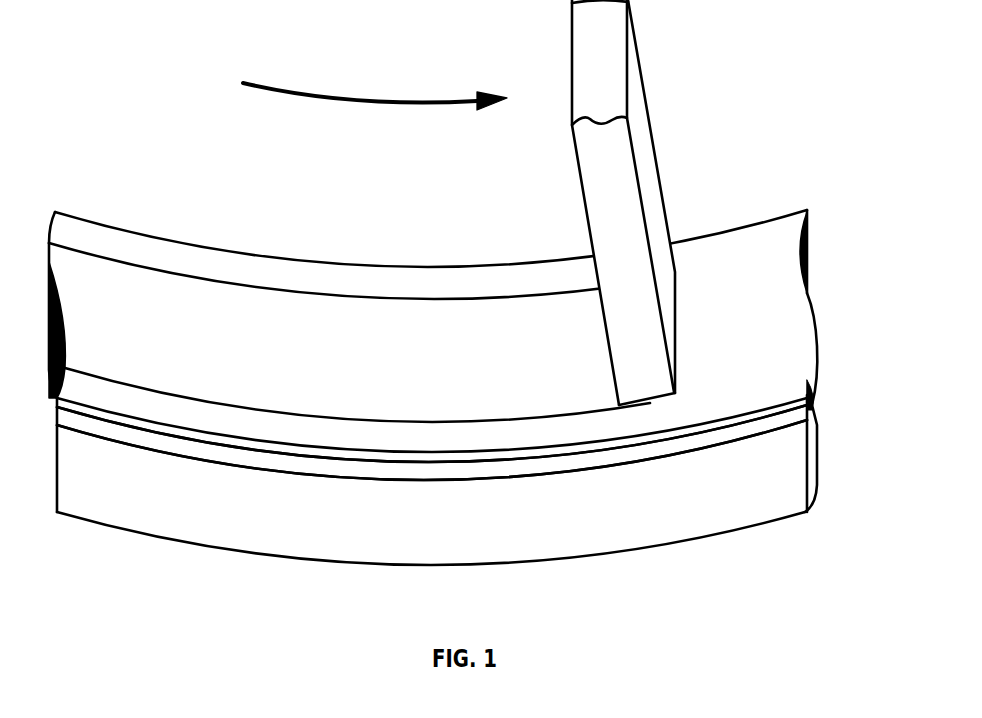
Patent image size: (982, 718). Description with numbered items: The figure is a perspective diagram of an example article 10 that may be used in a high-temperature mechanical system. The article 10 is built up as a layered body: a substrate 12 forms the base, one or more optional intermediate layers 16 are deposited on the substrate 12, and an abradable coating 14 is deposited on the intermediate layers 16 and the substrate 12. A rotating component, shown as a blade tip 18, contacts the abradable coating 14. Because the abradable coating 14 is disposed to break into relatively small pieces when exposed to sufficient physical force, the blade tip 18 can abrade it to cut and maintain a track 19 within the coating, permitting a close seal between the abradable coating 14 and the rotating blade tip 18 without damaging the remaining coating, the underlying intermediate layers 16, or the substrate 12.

The article 10 is at (461, 368).
The substrate 12 is at (783, 460).
The abradable coating 14 is at (813, 401).
The intermediate layers 16 is at (795, 421).
The blade tip 18 is at (678, 391).
The track 19 is at (453, 352).